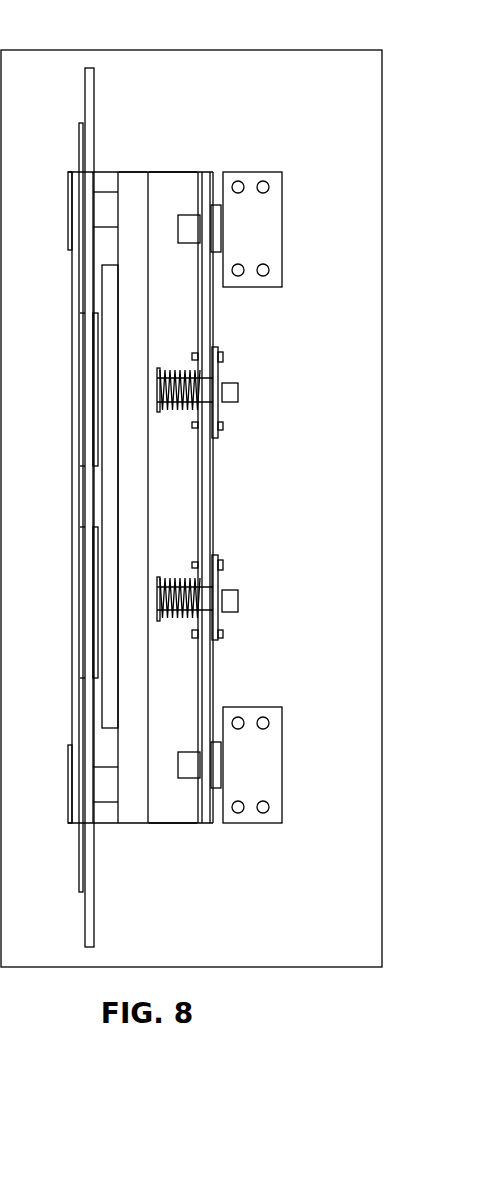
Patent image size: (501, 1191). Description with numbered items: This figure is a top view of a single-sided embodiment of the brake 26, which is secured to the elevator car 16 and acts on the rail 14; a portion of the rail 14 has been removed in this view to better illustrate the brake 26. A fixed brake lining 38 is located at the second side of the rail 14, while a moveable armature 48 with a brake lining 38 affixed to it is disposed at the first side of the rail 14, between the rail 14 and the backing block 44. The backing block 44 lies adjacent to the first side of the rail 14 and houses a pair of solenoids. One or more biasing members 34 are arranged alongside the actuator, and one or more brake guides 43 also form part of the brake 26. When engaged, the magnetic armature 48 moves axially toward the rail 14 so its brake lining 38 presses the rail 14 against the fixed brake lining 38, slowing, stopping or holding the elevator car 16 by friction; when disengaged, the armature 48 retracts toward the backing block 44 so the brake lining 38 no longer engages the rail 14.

The elevator car 16 is at (237, 49).
The rail 14 is at (95, 98).
The brake 26 is at (305, 156).
The biasing members 34 is at (228, 385).
The brake linings 38 is at (80, 353).
The brake guides 43 is at (100, 792).
The backing block 44 is at (137, 324).
The armature 48 is at (110, 501).